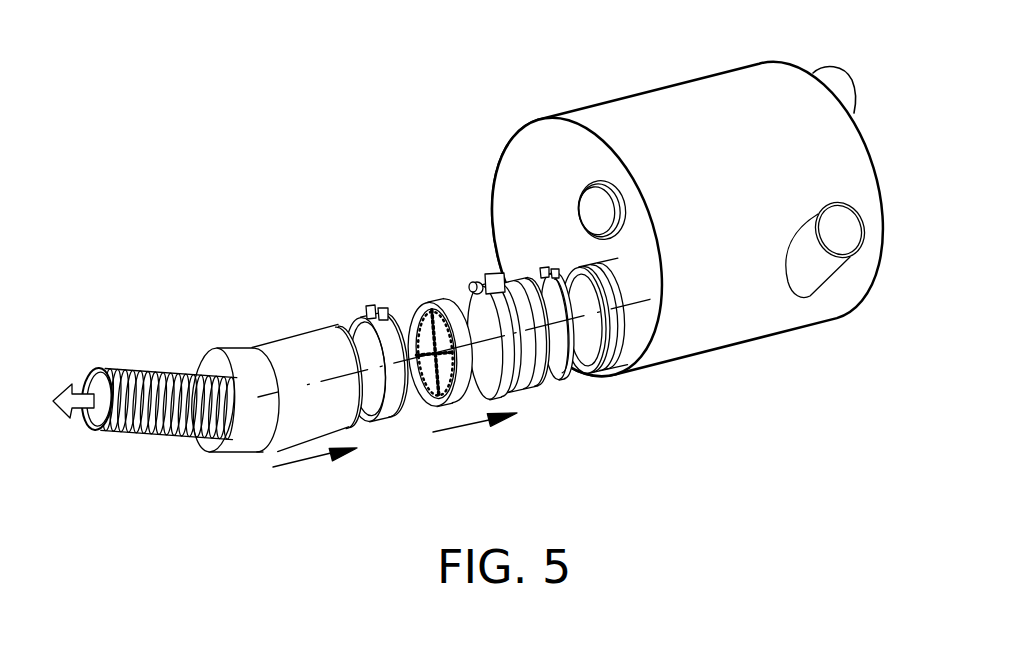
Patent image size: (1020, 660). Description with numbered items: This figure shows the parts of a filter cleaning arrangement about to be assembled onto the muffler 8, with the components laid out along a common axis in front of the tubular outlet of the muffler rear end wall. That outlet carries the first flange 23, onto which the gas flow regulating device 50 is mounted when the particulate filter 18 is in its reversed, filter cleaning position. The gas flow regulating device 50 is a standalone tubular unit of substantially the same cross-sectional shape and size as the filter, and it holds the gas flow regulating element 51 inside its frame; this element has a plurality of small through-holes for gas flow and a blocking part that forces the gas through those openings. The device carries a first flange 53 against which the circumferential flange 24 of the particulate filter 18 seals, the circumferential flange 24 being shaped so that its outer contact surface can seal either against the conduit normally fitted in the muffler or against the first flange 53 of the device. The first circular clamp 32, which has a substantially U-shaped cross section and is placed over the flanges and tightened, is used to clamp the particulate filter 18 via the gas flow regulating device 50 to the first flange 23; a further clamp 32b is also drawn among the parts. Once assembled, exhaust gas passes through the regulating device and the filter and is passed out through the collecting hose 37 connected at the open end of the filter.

The muffler 8 is at (682, 120).
The particulate filter 18 is at (290, 354).
The first flange 23 is at (611, 382).
The circumferential flange 24 is at (360, 419).
The first circular clamp 32 is at (400, 410).
The retaining ring 32b is at (567, 390).
The collecting hose 37 is at (157, 438).
The gas flow regulating device 50 is at (465, 288).
The gas flow regulating element 51 is at (427, 330).
The first flange 53 is at (420, 305).